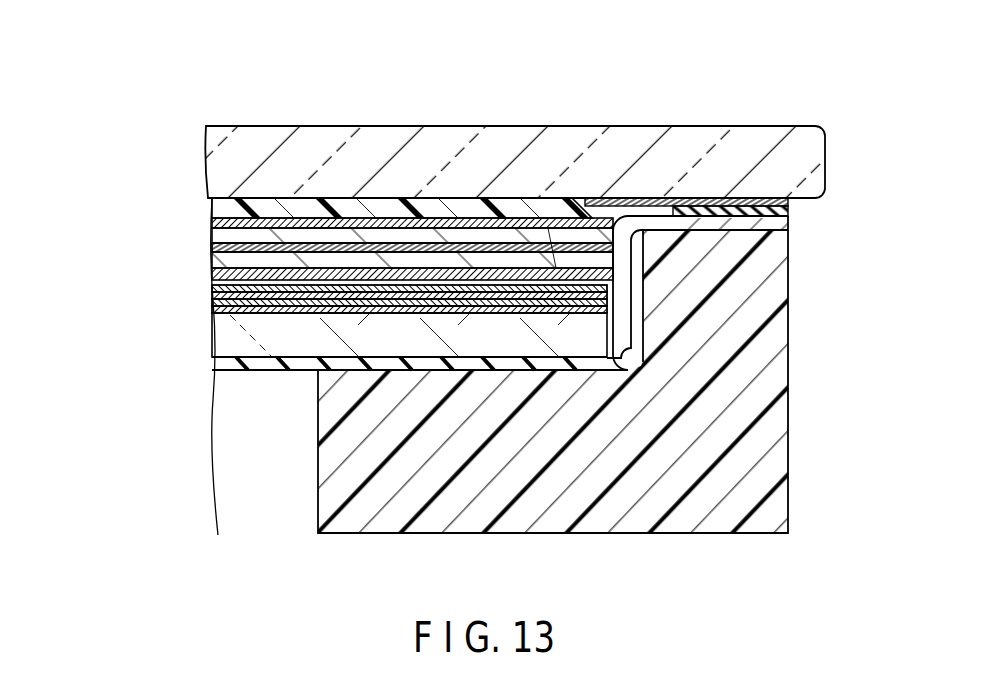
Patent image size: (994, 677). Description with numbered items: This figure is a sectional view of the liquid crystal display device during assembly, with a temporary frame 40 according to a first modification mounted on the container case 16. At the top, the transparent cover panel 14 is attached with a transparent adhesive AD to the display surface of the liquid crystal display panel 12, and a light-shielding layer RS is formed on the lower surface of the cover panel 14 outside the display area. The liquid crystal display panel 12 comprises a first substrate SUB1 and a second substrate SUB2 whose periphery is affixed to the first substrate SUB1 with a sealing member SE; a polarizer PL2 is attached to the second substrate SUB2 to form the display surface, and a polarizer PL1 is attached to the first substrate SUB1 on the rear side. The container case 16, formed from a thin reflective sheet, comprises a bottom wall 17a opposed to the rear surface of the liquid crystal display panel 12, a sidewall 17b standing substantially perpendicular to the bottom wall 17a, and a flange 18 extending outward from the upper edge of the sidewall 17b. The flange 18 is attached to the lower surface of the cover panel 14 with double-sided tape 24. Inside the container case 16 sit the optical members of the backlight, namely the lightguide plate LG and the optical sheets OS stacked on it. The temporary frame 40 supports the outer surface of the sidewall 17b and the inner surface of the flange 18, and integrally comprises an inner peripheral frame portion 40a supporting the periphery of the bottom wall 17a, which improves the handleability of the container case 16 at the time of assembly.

The cover panel 14 is at (812, 151).
The liquid crystal display panel 12 is at (340, 225).
The polarizer PL2 is at (214, 223).
The second substrate SUB2 is at (214, 238).
The first substrate SUB1 is at (214, 260).
The polarizer PL1 is at (371, 267).
The transparent adhesive AD is at (434, 208).
The sealing member SE is at (552, 243).
The light-shielding layer RS is at (742, 210).
The optical sheets OS is at (201, 288).
The lightguide plate LG is at (222, 342).
The container case 16 is at (231, 374).
The bottom wall 17a is at (272, 367).
The sidewall 17b is at (638, 292).
The flange 18 is at (778, 226).
The double-sided tape 24 is at (745, 215).
The temporary frame 40 is at (713, 517).
The inner peripheral frame portion 40a is at (430, 468).